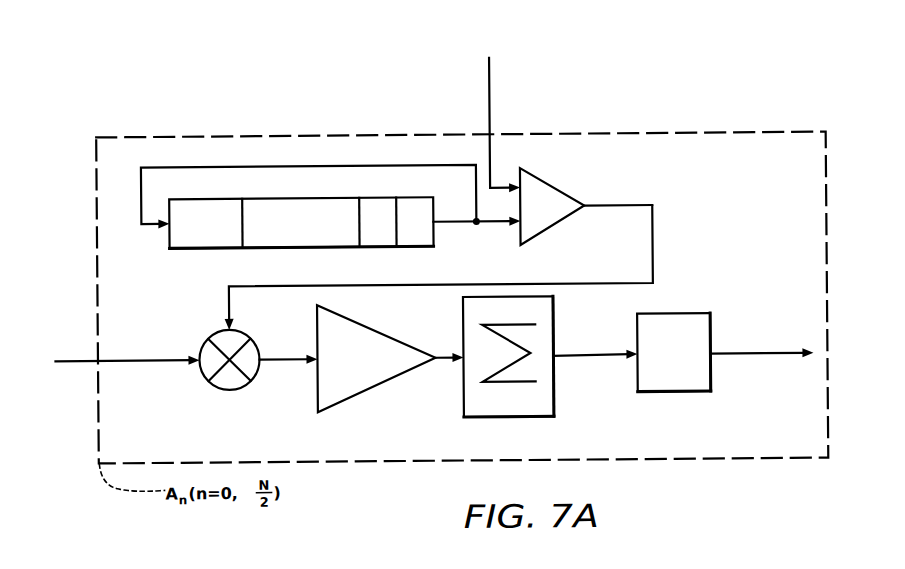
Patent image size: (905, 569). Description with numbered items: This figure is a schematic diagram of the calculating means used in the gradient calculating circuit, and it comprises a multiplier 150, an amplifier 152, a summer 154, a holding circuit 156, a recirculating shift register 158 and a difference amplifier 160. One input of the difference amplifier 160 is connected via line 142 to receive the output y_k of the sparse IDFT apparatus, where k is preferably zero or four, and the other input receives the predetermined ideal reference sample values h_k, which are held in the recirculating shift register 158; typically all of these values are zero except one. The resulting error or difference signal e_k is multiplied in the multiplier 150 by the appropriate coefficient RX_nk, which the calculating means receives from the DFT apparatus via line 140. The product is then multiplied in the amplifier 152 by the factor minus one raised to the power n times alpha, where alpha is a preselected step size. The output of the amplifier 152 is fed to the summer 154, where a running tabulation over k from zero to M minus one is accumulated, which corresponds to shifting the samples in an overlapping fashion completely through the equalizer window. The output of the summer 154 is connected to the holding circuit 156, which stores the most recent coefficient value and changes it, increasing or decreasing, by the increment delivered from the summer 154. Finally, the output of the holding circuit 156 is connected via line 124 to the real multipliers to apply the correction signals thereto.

The line 124 is at (728, 357).
The line 140 is at (172, 357).
The line 142 is at (492, 93).
The multiplier 150 is at (246, 382).
The amplifier 152 is at (366, 392).
The summer 154 is at (555, 397).
The holding circuit 156 is at (660, 394).
The recirculating shift register 158 is at (282, 247).
The difference amplifier 160 is at (552, 228).